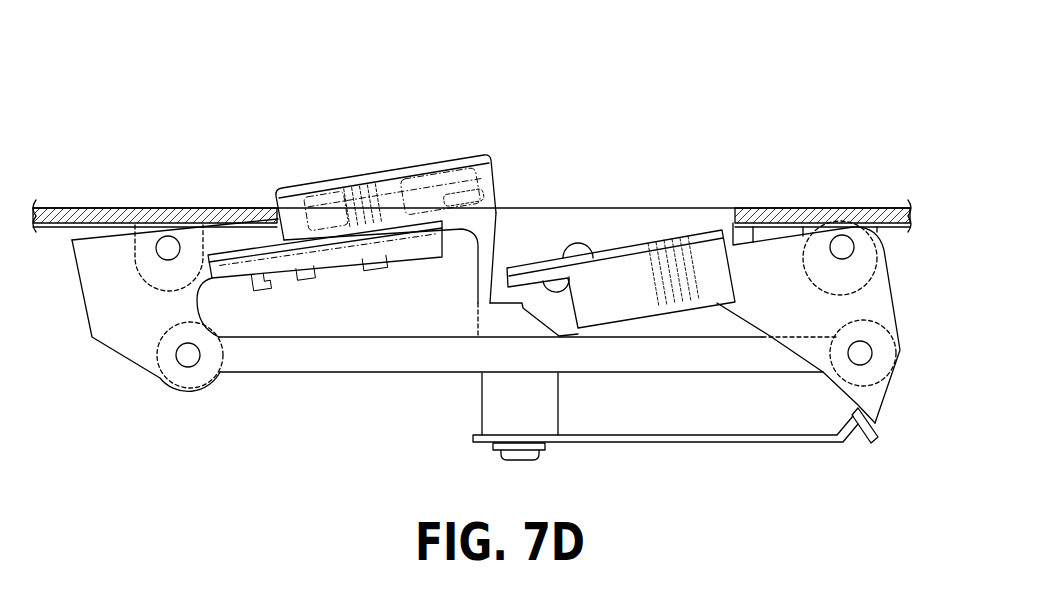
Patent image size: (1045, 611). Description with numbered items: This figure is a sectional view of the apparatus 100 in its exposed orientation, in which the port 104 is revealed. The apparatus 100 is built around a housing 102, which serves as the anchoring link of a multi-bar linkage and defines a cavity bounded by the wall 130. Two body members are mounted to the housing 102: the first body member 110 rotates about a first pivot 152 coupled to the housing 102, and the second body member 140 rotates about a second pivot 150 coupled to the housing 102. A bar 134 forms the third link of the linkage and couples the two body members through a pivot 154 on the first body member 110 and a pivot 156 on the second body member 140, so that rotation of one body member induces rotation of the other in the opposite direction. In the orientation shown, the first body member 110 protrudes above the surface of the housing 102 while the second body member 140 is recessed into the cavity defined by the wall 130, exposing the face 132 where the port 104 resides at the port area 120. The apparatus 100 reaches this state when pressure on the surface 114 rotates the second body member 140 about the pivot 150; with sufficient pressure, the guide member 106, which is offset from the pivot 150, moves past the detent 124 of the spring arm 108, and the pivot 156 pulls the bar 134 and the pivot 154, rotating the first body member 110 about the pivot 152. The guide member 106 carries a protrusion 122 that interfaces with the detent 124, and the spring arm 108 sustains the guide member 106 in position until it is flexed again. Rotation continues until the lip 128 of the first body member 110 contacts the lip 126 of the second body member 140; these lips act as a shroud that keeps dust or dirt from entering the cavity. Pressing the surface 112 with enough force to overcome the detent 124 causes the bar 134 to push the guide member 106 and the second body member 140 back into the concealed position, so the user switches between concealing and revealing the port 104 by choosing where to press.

The apparatus 100 is at (642, 122).
The housing 102 is at (818, 207).
The port 104 is at (450, 172).
The guide member 106 is at (897, 407).
The spring arm 108 is at (681, 453).
The first body member 110 is at (355, 154).
The surface 112 is at (397, 165).
The surface 114 is at (642, 230).
The port area 120 is at (530, 161).
The protrusion 122 is at (855, 397).
The detent 124 is at (851, 440).
The lip 126 is at (568, 291).
The lip 128 is at (510, 312).
The wall 130 is at (570, 240).
The face 132 is at (497, 176).
The bar 134 is at (423, 373).
The second body member 140 is at (684, 215).
The second pivot 150 is at (853, 248).
The first pivot 152 is at (160, 258).
The pivot 154 is at (185, 367).
The pivot 156 is at (877, 347).